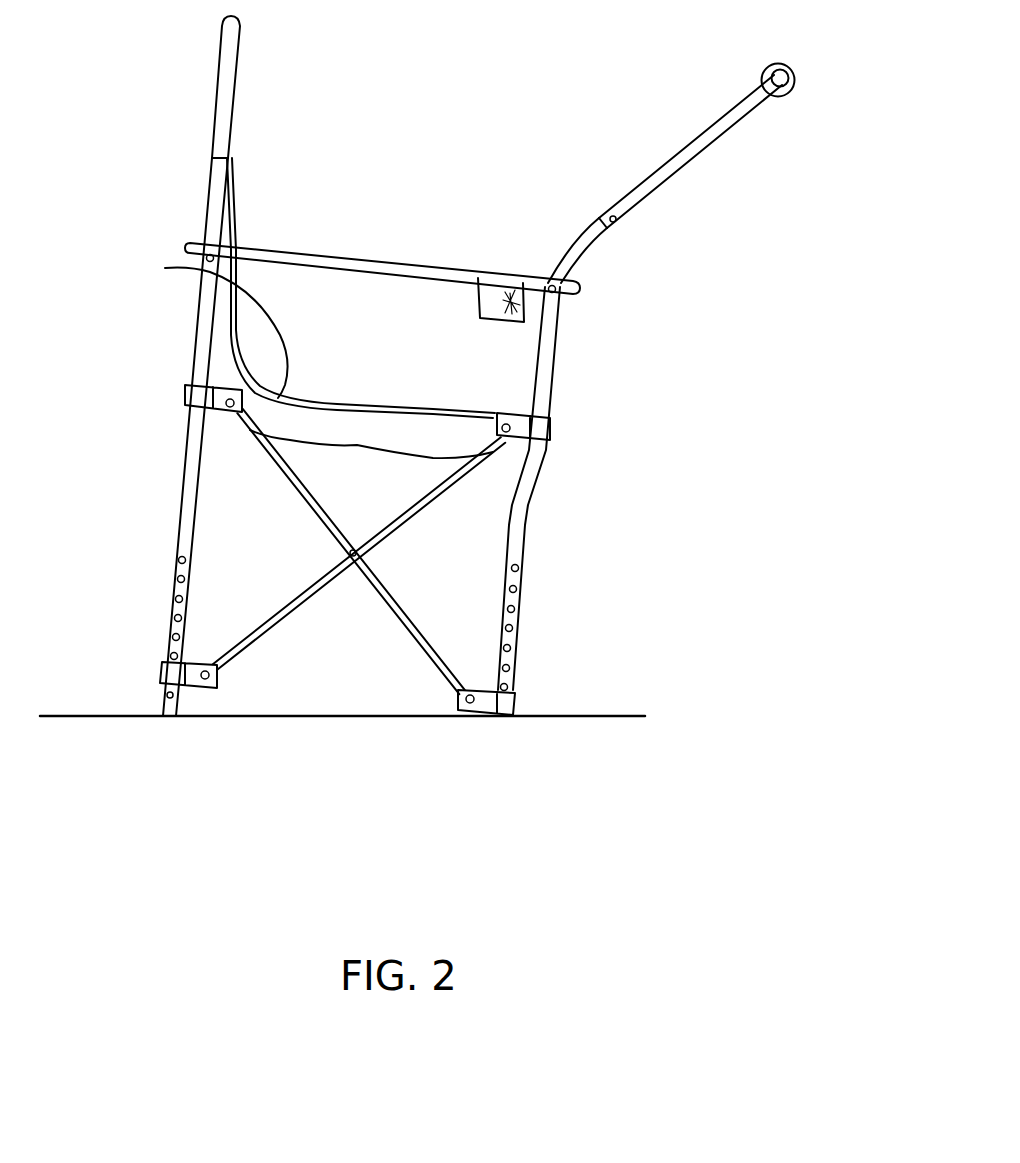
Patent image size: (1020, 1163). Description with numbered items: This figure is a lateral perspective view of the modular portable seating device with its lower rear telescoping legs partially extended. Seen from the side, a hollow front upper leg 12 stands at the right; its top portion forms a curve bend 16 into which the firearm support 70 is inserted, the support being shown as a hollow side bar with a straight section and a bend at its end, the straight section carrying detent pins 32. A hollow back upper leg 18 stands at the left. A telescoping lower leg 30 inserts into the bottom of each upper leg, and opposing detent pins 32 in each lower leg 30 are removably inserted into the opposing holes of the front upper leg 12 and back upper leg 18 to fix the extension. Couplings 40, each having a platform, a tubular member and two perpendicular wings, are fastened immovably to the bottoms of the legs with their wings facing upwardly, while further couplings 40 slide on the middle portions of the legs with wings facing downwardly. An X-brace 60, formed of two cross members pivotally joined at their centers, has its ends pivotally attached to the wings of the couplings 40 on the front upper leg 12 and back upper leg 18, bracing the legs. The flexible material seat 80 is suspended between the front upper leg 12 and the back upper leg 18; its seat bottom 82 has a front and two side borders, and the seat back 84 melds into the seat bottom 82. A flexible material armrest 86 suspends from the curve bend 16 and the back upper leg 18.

The front upper leg 12 is at (515, 652).
The curve bend 16 is at (588, 248).
The back upper leg 18 is at (172, 585).
The telescoping lower leg 30 is at (166, 695).
The detent pin 32 is at (618, 219).
The coupling 40 is at (215, 690).
The X-brace 60 is at (353, 600).
The firearm support 70 is at (775, 183).
The flexible material seat 80 is at (312, 188).
The seat bottom 82 is at (165, 268).
The seat back 84 is at (238, 100).
The flexible material armrest 86 is at (445, 265).